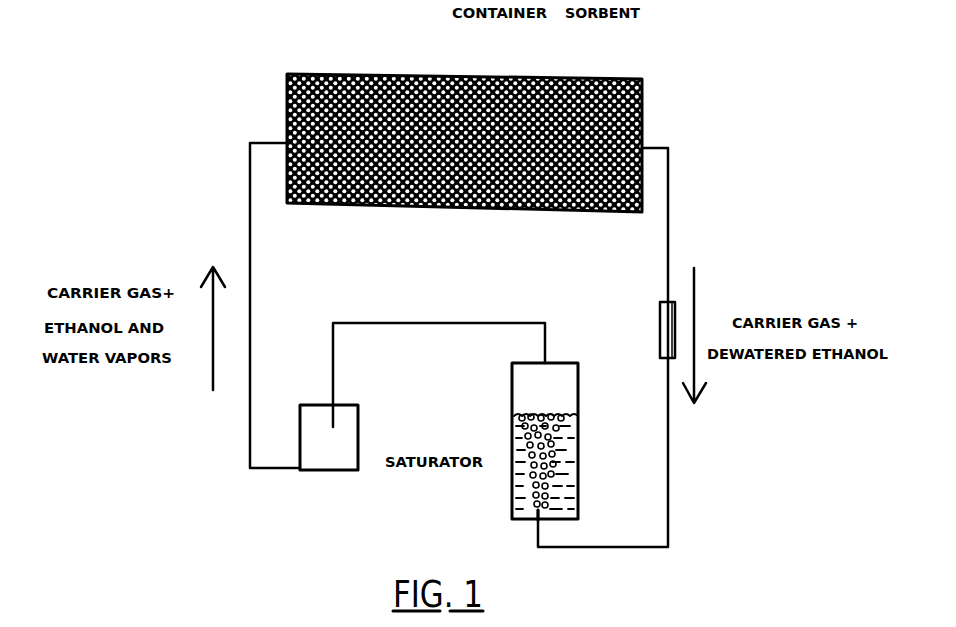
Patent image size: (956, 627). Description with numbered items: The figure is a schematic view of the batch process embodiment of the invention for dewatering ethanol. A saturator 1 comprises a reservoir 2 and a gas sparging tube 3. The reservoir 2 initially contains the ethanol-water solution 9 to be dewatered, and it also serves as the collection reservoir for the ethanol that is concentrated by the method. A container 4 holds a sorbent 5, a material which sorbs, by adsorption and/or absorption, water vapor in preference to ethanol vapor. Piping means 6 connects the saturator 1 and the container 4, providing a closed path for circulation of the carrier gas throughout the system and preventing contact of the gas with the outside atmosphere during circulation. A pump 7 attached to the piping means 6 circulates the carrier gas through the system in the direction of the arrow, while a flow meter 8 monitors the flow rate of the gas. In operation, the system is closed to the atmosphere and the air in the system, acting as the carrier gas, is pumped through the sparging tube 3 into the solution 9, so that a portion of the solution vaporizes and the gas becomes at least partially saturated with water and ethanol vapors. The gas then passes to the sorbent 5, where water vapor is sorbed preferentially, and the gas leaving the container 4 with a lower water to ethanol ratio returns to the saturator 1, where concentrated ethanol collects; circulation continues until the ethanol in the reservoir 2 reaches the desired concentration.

The saturator 1 is at (547, 456).
The reservoir 2 is at (578, 385).
The gas sparging tube 3 is at (561, 530).
The container 4 is at (480, 76).
The sorbent 5 is at (535, 102).
The piping means 6 is at (250, 200).
The pump 7 is at (334, 471).
The flow meter 8 is at (660, 331).
The ethanol-water solution 9 is at (578, 456).